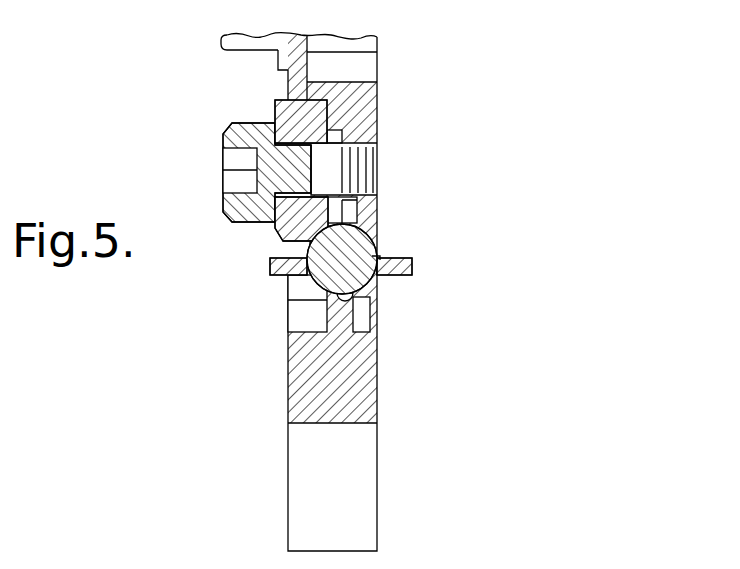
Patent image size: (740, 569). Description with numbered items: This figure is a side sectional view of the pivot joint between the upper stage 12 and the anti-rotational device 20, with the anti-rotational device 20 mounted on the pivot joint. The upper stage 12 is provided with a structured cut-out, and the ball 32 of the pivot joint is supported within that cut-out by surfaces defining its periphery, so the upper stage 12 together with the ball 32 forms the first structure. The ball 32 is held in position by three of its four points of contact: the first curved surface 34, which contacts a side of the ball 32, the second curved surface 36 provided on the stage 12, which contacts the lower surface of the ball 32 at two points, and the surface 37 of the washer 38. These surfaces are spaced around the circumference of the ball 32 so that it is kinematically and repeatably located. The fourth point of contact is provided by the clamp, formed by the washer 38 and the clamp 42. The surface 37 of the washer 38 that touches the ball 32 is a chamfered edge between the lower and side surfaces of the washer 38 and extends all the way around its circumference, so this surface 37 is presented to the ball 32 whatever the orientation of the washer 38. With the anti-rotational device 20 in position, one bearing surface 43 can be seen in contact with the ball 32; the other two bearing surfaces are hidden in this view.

The upper stage 12 is at (340, 388).
The anti-rotational device 20 is at (412, 266).
The ball 32 is at (326, 280).
The first curved surface 34 is at (342, 300).
The second curved surface 36 is at (366, 235).
The surface of the washer 37 is at (275, 228).
The washer 38 is at (275, 113).
The clamp 42 is at (226, 138).
The bearing surface 43 is at (380, 258).